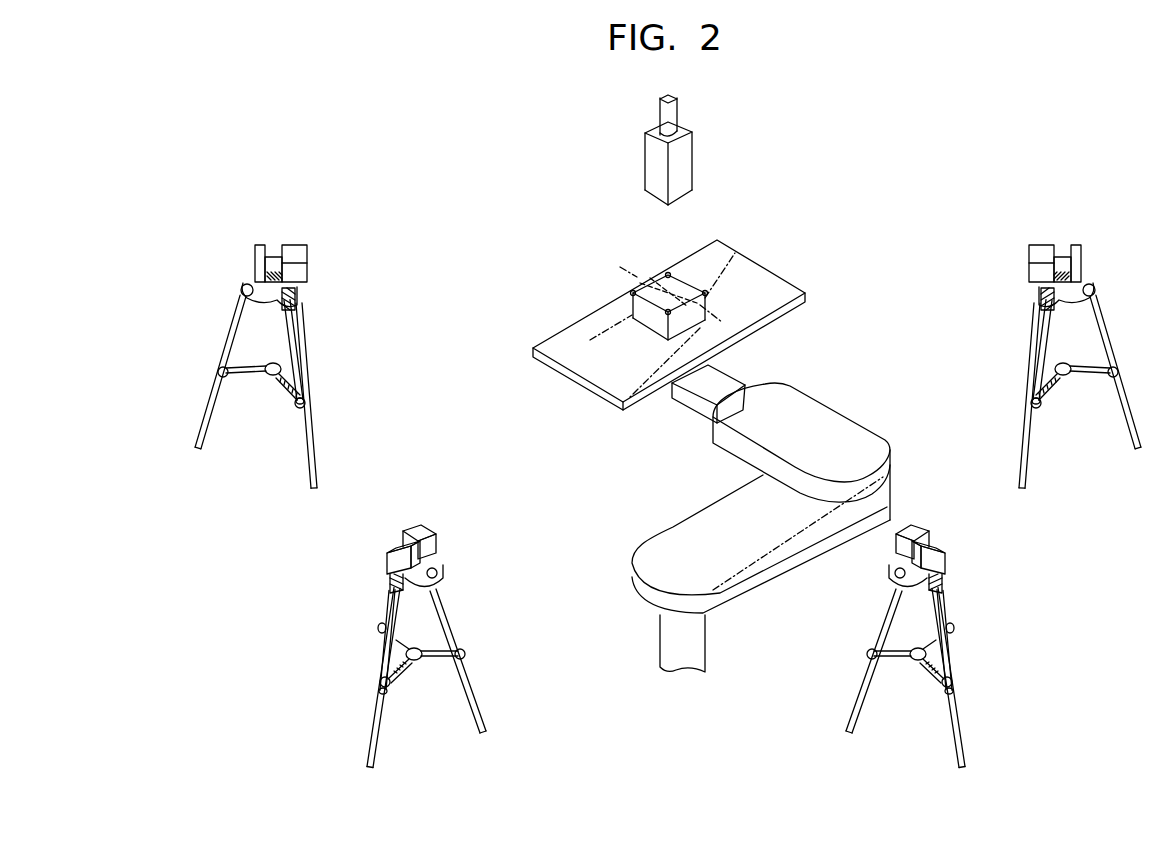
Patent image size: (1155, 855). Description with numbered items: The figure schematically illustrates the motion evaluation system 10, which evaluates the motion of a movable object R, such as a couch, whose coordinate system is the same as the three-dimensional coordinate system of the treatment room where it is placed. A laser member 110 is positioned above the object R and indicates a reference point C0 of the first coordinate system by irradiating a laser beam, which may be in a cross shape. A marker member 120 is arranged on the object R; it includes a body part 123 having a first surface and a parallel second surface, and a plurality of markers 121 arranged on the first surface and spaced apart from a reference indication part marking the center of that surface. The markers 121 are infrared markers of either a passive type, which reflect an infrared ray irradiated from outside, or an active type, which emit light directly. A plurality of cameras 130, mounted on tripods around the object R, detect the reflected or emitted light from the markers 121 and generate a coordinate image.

The motion evaluation system 10 is at (1116, 160).
The laser member 110 is at (685, 165).
The marker member 120 is at (729, 319).
The markers 121 is at (707, 294).
The body part 123 is at (706, 306).
The cameras 130 is at (293, 244).
The reference point C0 is at (662, 290).
The object R is at (570, 294).